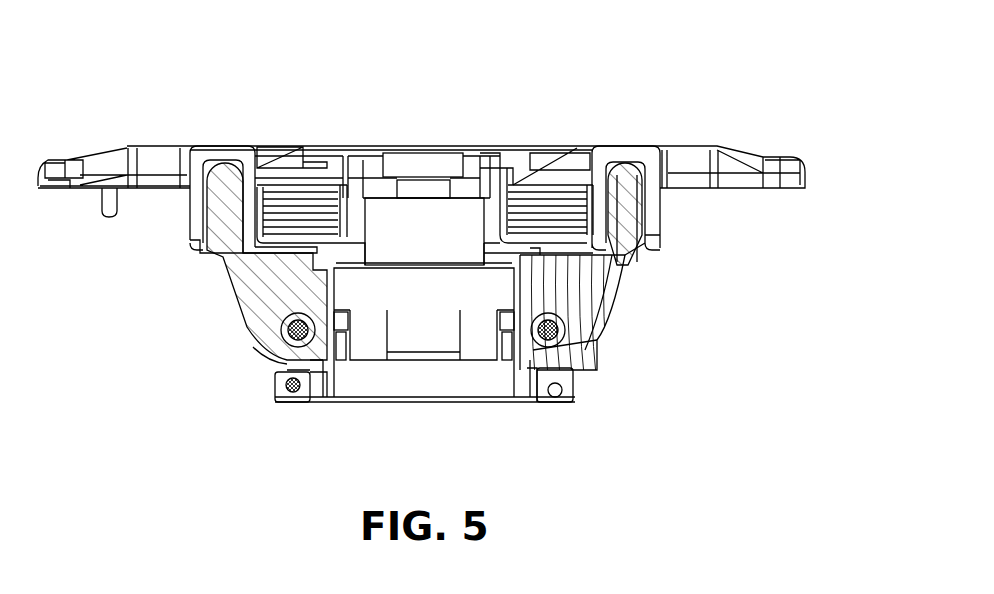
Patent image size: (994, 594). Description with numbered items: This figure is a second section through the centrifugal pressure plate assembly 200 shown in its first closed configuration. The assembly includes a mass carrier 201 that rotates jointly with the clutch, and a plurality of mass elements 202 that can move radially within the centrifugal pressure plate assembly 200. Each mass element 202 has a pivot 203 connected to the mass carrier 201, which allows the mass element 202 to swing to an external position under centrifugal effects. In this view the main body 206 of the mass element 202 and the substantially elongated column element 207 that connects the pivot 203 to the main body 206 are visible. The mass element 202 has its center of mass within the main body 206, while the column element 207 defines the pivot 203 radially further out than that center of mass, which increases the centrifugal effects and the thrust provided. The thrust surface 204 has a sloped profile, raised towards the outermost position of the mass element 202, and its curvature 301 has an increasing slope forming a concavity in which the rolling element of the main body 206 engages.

The centrifugal pressure plate assembly 200 is at (612, 52).
The mass carrier 201 is at (343, 250).
The mass element 202 is at (273, 240).
The pivot 203 is at (624, 178).
The thrust surface 204 is at (275, 368).
The main body 206 is at (577, 288).
The column element 207 is at (617, 216).
The curvature 301 is at (290, 377).